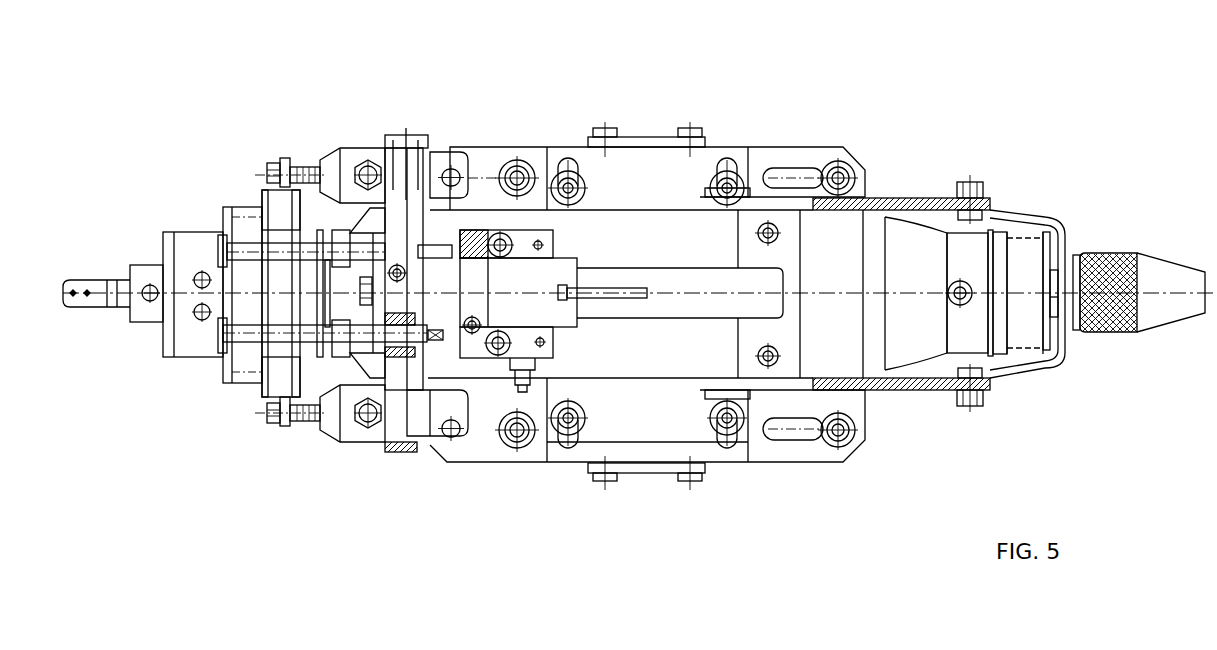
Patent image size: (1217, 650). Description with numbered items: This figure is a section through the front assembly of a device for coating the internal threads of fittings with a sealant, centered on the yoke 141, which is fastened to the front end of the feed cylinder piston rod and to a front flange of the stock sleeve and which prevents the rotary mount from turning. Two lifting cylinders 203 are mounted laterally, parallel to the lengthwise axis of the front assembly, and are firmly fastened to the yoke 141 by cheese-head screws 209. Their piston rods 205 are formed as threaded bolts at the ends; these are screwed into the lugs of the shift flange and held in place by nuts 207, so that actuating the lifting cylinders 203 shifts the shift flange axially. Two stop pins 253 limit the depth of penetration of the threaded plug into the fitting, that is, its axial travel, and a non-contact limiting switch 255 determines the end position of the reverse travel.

The yoke 141 is at (432, 158).
The lifting cylinders 203 is at (348, 158).
The piston rods 205 is at (306, 160).
The nuts 207 is at (268, 163).
The cheese-head screws 209 is at (397, 135).
The stop pins 253 is at (223, 245).
The non-contact limiting switch 255 is at (543, 283).